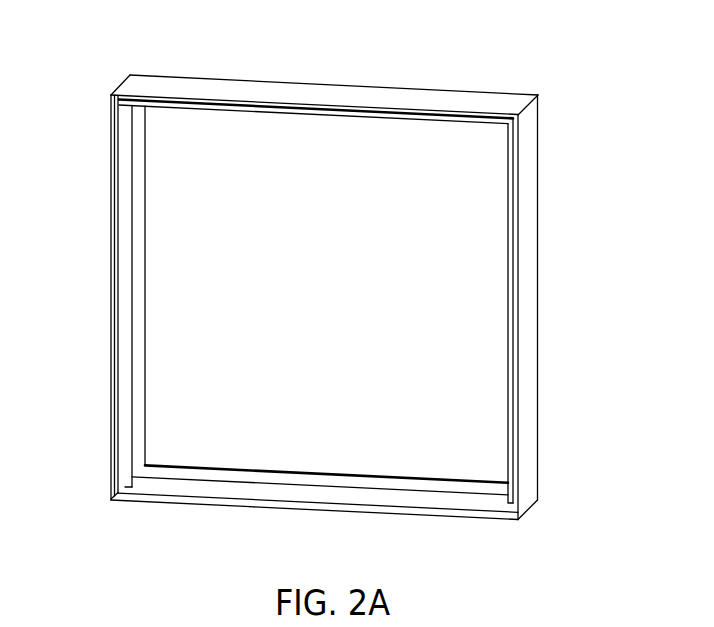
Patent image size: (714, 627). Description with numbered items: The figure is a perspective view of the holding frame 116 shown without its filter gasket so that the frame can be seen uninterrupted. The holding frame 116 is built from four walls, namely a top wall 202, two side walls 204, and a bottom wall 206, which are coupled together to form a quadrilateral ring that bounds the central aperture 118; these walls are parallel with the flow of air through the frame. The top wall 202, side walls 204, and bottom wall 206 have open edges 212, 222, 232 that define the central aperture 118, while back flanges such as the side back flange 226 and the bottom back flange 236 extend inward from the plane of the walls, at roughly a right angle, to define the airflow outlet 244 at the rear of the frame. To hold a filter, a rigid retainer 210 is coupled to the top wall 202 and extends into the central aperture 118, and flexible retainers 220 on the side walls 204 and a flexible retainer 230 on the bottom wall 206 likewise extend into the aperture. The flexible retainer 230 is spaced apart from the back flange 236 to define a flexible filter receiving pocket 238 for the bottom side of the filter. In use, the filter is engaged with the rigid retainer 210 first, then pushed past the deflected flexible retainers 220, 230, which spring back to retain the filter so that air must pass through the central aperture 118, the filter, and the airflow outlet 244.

The holding frame 116 is at (402, 73).
The central aperture 118 is at (318, 323).
The top wall 202 is at (252, 96).
The side walls 204 is at (112, 252).
The bottom wall 206 is at (440, 514).
The rigid retainer 210 is at (166, 101).
The open edge 212 is at (428, 120).
The flexible retainers 220 is at (122, 316).
The open edge 222 is at (113, 452).
The back flange 226 is at (134, 217).
The flexible retainer 230 is at (282, 498).
The open edge 232 is at (170, 504).
The back flange 236 is at (445, 491).
The flexible filter receiving pocket 238 is at (485, 470).
The airflow outlet 244 is at (543, 122).